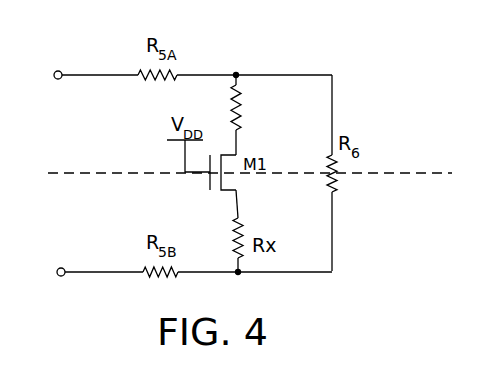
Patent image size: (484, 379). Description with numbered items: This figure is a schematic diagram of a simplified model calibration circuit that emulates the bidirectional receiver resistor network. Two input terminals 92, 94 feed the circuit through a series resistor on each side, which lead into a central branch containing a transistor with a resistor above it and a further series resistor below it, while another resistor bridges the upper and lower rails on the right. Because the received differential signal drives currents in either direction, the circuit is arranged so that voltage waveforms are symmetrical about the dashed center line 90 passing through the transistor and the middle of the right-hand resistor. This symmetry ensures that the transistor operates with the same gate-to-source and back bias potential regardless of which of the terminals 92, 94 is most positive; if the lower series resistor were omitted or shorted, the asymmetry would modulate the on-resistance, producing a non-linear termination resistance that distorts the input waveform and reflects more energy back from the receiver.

The dashed center line 90 is at (428, 172).
The first input terminal 92 is at (100, 74).
The second input terminal 94 is at (101, 271).